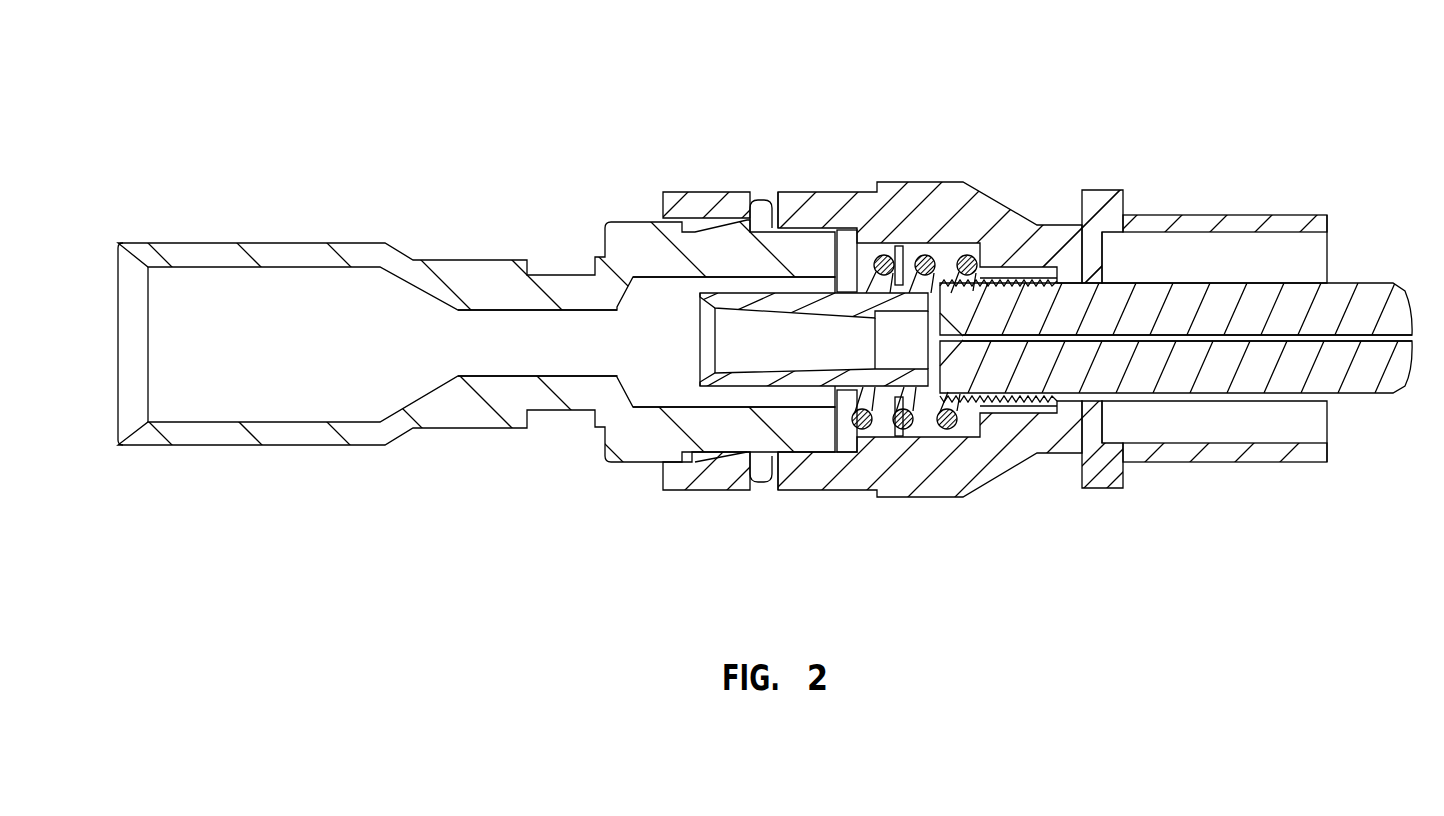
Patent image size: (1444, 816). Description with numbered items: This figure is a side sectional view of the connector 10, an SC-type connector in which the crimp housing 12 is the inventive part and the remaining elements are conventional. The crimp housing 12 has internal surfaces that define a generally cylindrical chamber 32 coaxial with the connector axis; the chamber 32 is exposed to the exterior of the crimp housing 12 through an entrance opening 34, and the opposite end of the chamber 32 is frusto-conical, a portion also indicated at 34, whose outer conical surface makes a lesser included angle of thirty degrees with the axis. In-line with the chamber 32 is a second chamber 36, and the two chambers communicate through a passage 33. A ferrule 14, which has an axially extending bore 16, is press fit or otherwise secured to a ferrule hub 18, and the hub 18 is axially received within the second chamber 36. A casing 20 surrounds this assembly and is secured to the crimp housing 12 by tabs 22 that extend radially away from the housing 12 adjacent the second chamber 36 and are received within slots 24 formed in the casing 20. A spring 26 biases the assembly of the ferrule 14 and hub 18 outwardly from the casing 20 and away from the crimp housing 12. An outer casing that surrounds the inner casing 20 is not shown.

The connector 10 is at (553, 113).
The crimp housing 12 is at (291, 241).
The ferrule 14 is at (1373, 282).
The bore 16 is at (1412, 341).
The ferrule hub 18 is at (803, 314).
The casing 20 is at (943, 182).
The tabs 22 is at (759, 198).
The slots 24 is at (771, 198).
The spring 26 is at (920, 252).
The chamber 32 is at (285, 352).
The passage 33 is at (552, 352).
The entrance opening 34 is at (147, 423).
The second chamber 36 is at (683, 322).